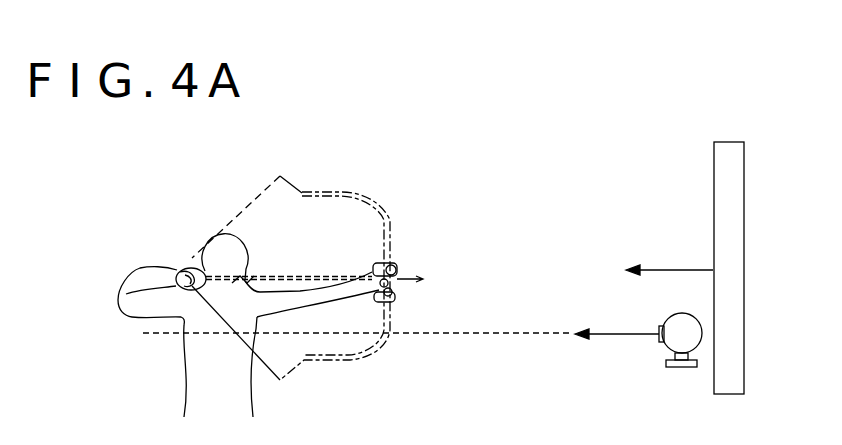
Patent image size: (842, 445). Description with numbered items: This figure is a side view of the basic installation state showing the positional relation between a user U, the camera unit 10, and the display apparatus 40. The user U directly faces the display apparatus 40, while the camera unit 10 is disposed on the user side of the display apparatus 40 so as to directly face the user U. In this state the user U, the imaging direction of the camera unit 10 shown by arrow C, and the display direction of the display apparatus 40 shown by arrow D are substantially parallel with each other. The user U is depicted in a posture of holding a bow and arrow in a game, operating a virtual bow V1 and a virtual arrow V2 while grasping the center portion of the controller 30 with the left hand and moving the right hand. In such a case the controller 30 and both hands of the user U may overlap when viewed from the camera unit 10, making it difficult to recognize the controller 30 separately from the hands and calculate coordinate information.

The user U is at (205, 239).
The virtual bow V1 is at (356, 193).
The virtual arrow V2 is at (288, 277).
The controller 30 is at (393, 265).
The camera unit 10 is at (678, 367).
The display apparatus 40 is at (727, 142).
The imaging direction C is at (401, 325).
The display direction D is at (669, 260).